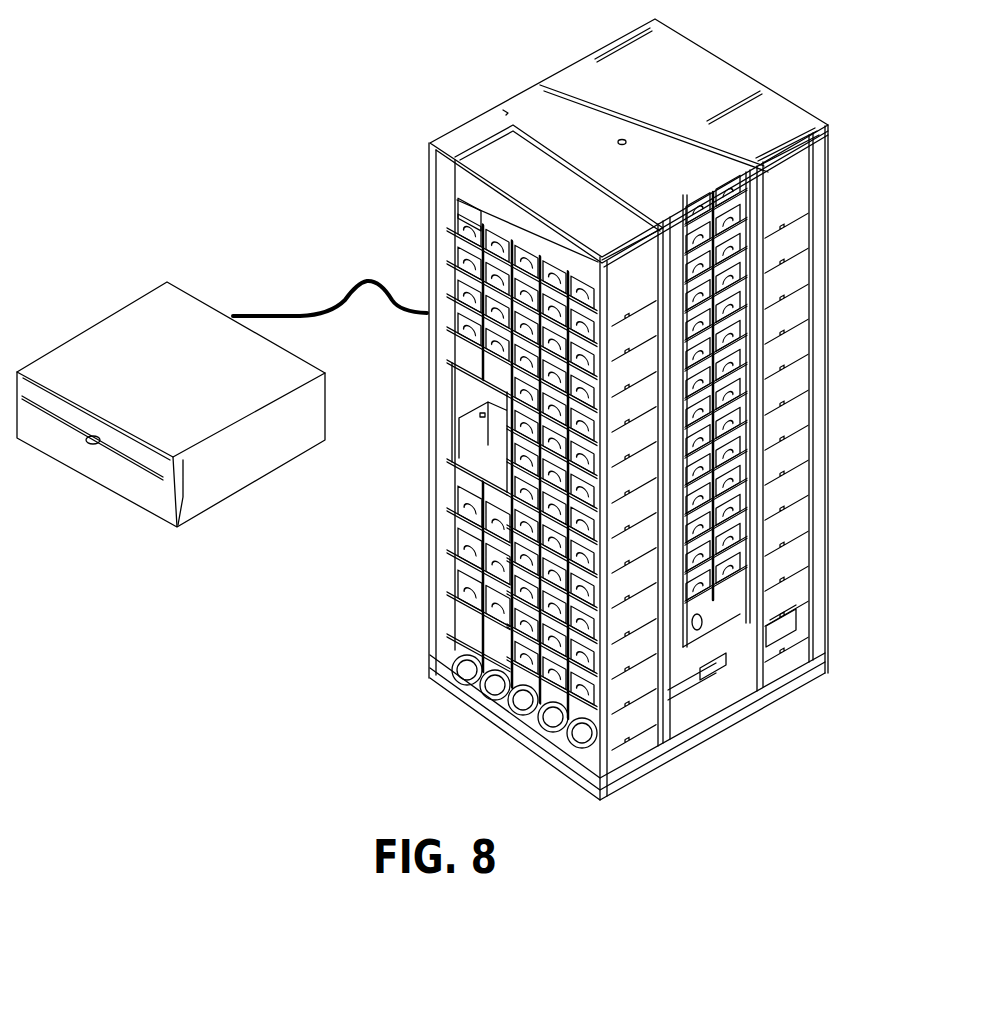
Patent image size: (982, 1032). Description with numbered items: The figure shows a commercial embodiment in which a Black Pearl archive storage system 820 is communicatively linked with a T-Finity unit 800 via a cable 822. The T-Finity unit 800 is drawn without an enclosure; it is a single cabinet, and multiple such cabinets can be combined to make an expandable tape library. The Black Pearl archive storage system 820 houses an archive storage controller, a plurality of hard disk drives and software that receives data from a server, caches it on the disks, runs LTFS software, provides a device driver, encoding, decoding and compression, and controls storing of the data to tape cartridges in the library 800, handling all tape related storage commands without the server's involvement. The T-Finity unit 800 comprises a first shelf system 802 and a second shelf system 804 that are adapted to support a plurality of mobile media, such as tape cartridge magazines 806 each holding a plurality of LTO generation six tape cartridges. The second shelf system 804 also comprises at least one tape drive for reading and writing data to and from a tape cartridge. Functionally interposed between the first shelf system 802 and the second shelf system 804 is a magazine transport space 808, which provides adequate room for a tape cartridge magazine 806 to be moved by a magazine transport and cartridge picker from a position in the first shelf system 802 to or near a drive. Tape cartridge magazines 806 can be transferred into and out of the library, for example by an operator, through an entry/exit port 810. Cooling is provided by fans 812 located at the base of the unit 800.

The T-Finity unit 800 is at (458, 84).
The first shelf system 802 is at (410, 518).
The second shelf system 804 is at (845, 422).
The tape cartridge magazine 806 is at (444, 266).
The magazine transport space 808 is at (727, 685).
The entry/exit port 810 is at (470, 440).
The fans 812 is at (460, 711).
The Black Pearl archive storage system 820 is at (147, 293).
The cable 822 is at (320, 303).